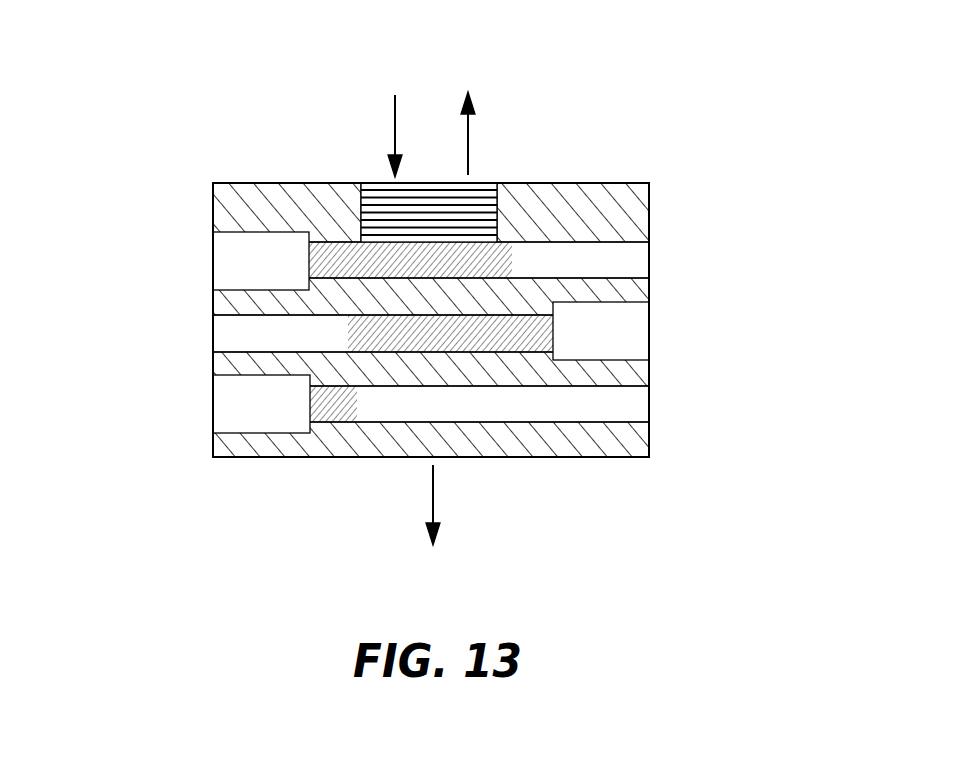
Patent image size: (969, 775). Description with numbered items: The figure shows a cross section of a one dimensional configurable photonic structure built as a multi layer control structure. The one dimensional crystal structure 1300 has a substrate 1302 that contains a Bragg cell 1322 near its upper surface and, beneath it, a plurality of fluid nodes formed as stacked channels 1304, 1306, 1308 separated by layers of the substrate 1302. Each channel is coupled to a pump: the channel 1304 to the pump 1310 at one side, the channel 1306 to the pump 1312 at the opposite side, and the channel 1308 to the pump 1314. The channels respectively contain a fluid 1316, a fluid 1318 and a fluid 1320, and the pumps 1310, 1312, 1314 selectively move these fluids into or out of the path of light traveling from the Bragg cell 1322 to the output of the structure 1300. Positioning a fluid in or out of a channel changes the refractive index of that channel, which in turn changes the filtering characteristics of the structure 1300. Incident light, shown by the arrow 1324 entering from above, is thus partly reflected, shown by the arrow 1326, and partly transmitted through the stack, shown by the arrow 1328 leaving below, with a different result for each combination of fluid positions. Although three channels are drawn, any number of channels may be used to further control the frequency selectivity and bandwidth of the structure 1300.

The one dimensional crystal structure 1300 is at (725, 100).
The substrate 1302 is at (643, 205).
The channel 1304 is at (643, 266).
The channel 1306 is at (223, 337).
The channel 1308 is at (643, 405).
The pump 1310 is at (223, 262).
The pump 1312 is at (643, 331).
The pump 1314 is at (223, 405).
The fluid 1316 is at (325, 256).
The fluid 1318 is at (497, 337).
The fluid 1320 is at (335, 405).
The Bragg cell 1322 is at (483, 181).
The incident light arrow 1324 is at (393, 133).
The reflected light arrow 1326 is at (469, 132).
The transmitted light arrow 1328 is at (433, 498).